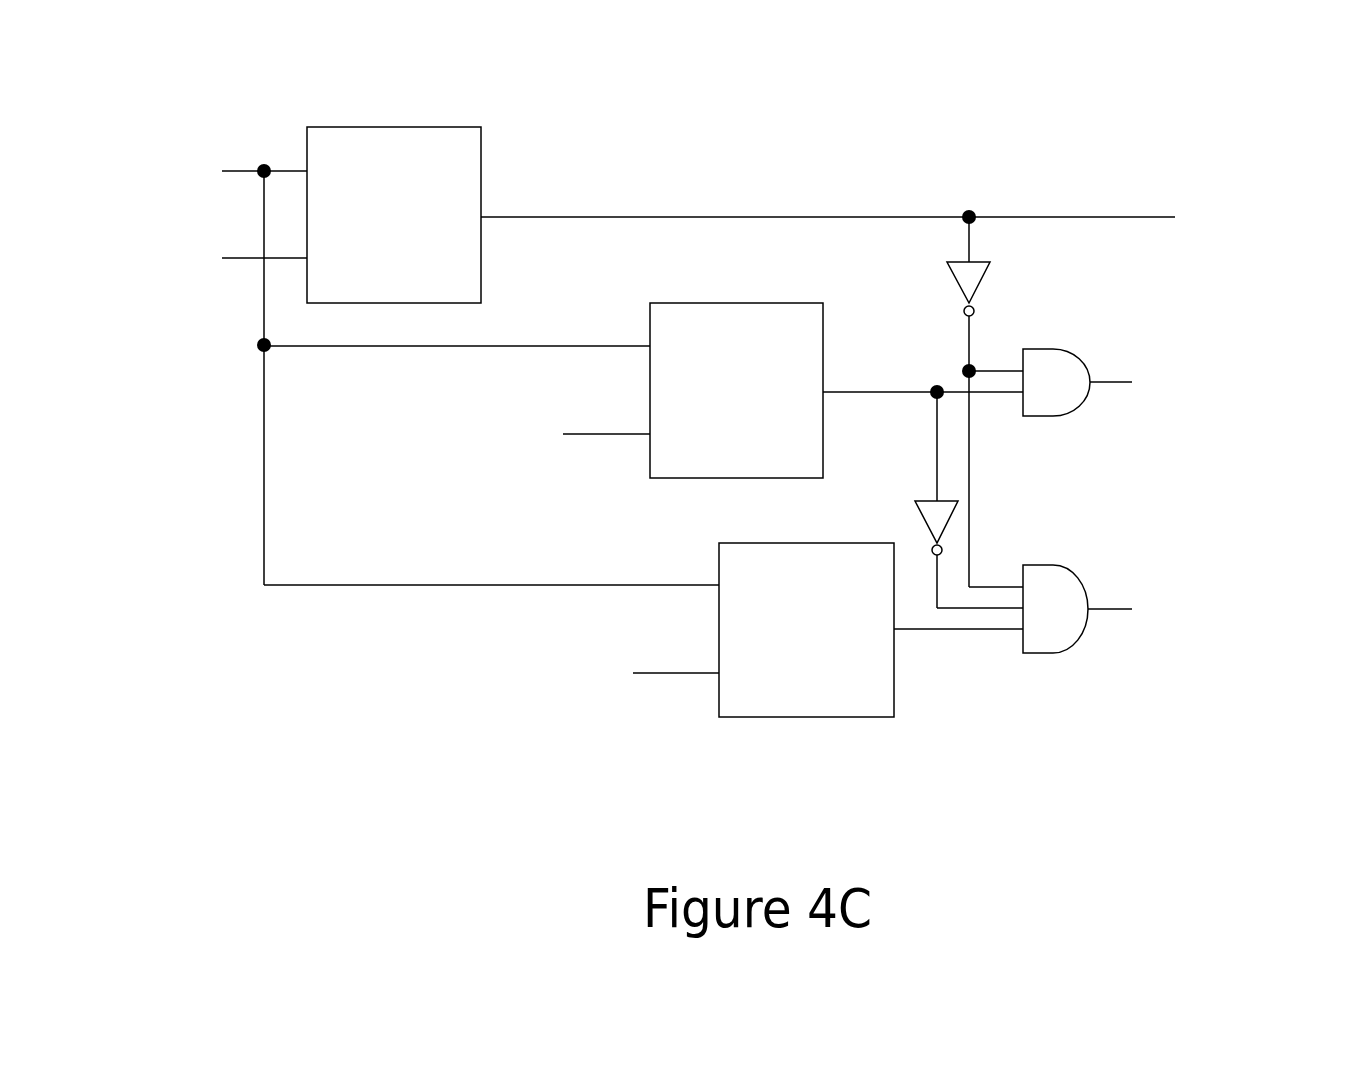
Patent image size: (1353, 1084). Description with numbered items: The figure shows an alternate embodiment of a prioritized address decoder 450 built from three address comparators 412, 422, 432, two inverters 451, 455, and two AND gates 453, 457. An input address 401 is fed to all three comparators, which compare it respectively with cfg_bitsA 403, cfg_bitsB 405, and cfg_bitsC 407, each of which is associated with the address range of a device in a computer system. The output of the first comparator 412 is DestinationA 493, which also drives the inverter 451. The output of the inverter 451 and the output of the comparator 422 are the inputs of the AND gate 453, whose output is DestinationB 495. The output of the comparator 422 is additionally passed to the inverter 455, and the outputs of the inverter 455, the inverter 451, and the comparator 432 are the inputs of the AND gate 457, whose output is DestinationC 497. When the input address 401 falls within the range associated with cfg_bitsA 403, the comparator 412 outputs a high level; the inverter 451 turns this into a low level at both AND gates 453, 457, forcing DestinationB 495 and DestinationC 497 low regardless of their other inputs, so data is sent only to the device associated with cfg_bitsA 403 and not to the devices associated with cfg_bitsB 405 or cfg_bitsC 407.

The input address 401 is at (413, 362).
The cfg_bitsA 403 is at (207, 257).
The cfg_bitsB 405 is at (546, 427).
The cfg_bitsC 407 is at (607, 665).
The address comparator 412 is at (394, 215).
The address comparator 422 is at (736, 390).
The address comparator 432 is at (806, 630).
The prioritized address decoder 450 is at (1083, 90).
The inverter 451 is at (989, 402).
The AND gate 453 is at (956, 382).
The inverter 455 is at (911, 500).
The AND gate 457 is at (991, 609).
The DestinationA 493 is at (901, 220).
The DestinationB 495 is at (1211, 392).
The DestinationC 497 is at (1208, 630).